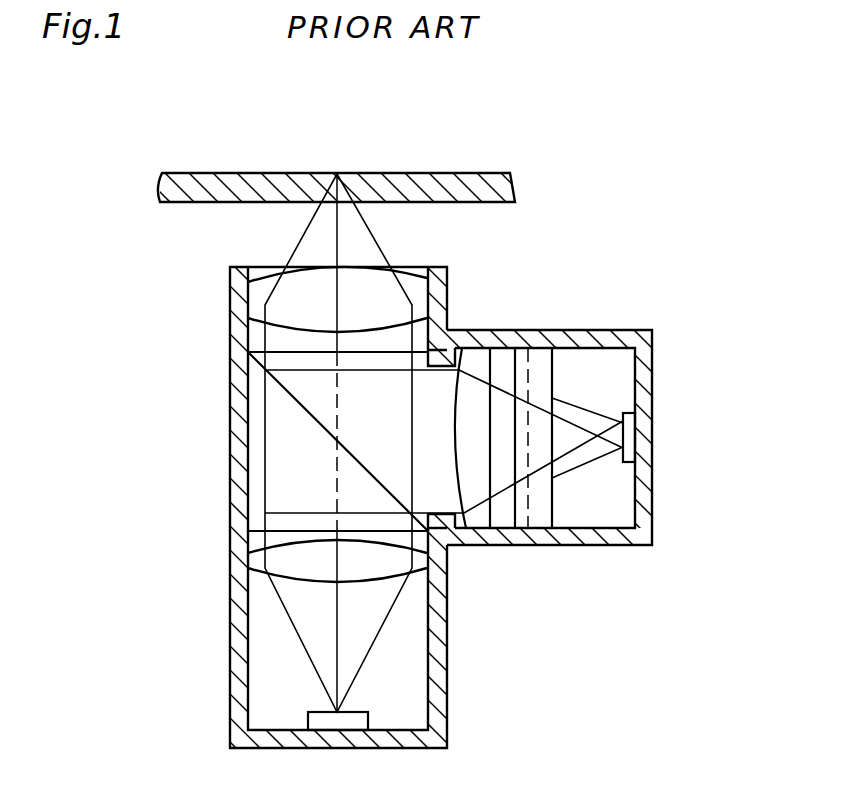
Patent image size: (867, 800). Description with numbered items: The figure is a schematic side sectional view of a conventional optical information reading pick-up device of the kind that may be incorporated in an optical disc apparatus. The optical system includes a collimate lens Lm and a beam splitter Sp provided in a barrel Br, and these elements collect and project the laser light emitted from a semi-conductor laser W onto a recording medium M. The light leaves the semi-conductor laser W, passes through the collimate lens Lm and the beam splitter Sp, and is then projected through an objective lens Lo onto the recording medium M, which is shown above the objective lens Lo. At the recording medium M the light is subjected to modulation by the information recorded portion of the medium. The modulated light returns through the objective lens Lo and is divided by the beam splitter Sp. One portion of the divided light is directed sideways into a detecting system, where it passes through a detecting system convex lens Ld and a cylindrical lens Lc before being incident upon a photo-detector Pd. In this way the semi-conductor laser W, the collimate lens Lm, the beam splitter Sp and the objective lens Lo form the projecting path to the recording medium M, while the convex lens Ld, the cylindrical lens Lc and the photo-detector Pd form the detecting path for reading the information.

The recording medium M is at (515, 184).
The objective lens Lo is at (417, 293).
The detecting system convex lens Ld is at (487, 358).
The beam splitter Sp is at (257, 402).
The photo-detector Pd is at (628, 425).
The barrel Br is at (652, 490).
The cylindrical lens Lc is at (547, 528).
The collimate lens Lm is at (420, 562).
The semi-conductor laser W is at (368, 718).